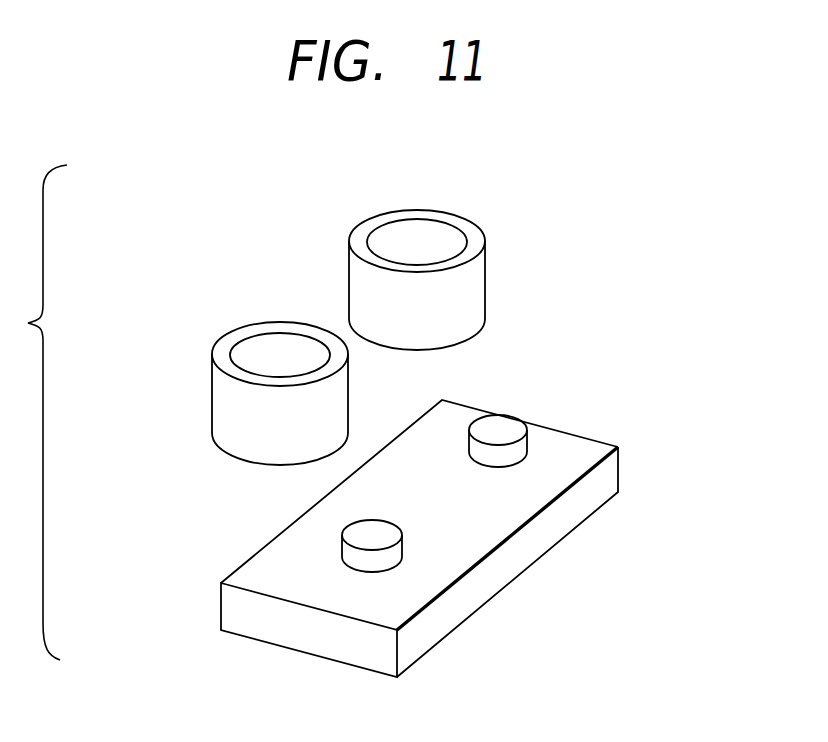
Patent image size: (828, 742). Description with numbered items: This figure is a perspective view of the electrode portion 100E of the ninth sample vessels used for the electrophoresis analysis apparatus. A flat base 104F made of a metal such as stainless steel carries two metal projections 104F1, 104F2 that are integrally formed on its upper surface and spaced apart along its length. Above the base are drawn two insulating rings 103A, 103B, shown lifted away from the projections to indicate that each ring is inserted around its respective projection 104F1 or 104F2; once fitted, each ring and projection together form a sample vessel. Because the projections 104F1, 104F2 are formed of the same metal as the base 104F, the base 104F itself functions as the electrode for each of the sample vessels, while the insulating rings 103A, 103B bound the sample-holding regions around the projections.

The assembly of electronic components 100E is at (188, 258).
The insulating ring 103A is at (222, 400).
The insulating ring 103B is at (467, 302).
The base 104F is at (530, 547).
The projection 104F1 is at (383, 555).
The projection 104F2 is at (510, 450).